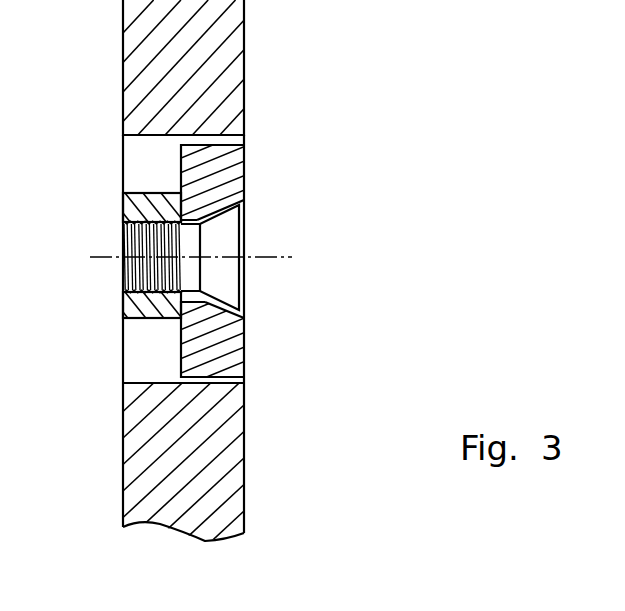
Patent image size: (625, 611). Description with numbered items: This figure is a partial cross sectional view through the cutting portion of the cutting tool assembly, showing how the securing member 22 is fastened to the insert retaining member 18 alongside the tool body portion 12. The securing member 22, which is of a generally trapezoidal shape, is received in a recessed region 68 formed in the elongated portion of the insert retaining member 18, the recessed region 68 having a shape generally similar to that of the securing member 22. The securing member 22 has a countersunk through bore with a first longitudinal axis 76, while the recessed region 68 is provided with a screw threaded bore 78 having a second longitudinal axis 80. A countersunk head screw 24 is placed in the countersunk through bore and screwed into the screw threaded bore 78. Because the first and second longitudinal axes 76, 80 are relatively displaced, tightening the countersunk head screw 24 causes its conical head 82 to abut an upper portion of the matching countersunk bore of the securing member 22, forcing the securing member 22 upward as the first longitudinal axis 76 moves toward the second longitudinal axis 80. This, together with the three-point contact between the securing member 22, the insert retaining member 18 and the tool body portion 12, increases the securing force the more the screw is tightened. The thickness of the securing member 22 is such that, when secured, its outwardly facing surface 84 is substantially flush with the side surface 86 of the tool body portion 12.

The tool body portion 12 is at (161, 436).
The insert retaining member 18 is at (109, 274).
The securing member 22 is at (258, 257).
The countersunk head screw 24 is at (266, 294).
The recessed region 68 is at (215, 349).
The first longitudinal axis 76 is at (287, 262).
The screw threaded bore 78 is at (122, 273).
The second longitudinal axis 80 is at (100, 255).
The conical head 82 is at (228, 243).
The outwardly facing surface 84 is at (244, 183).
The side surface 86 is at (244, 77).